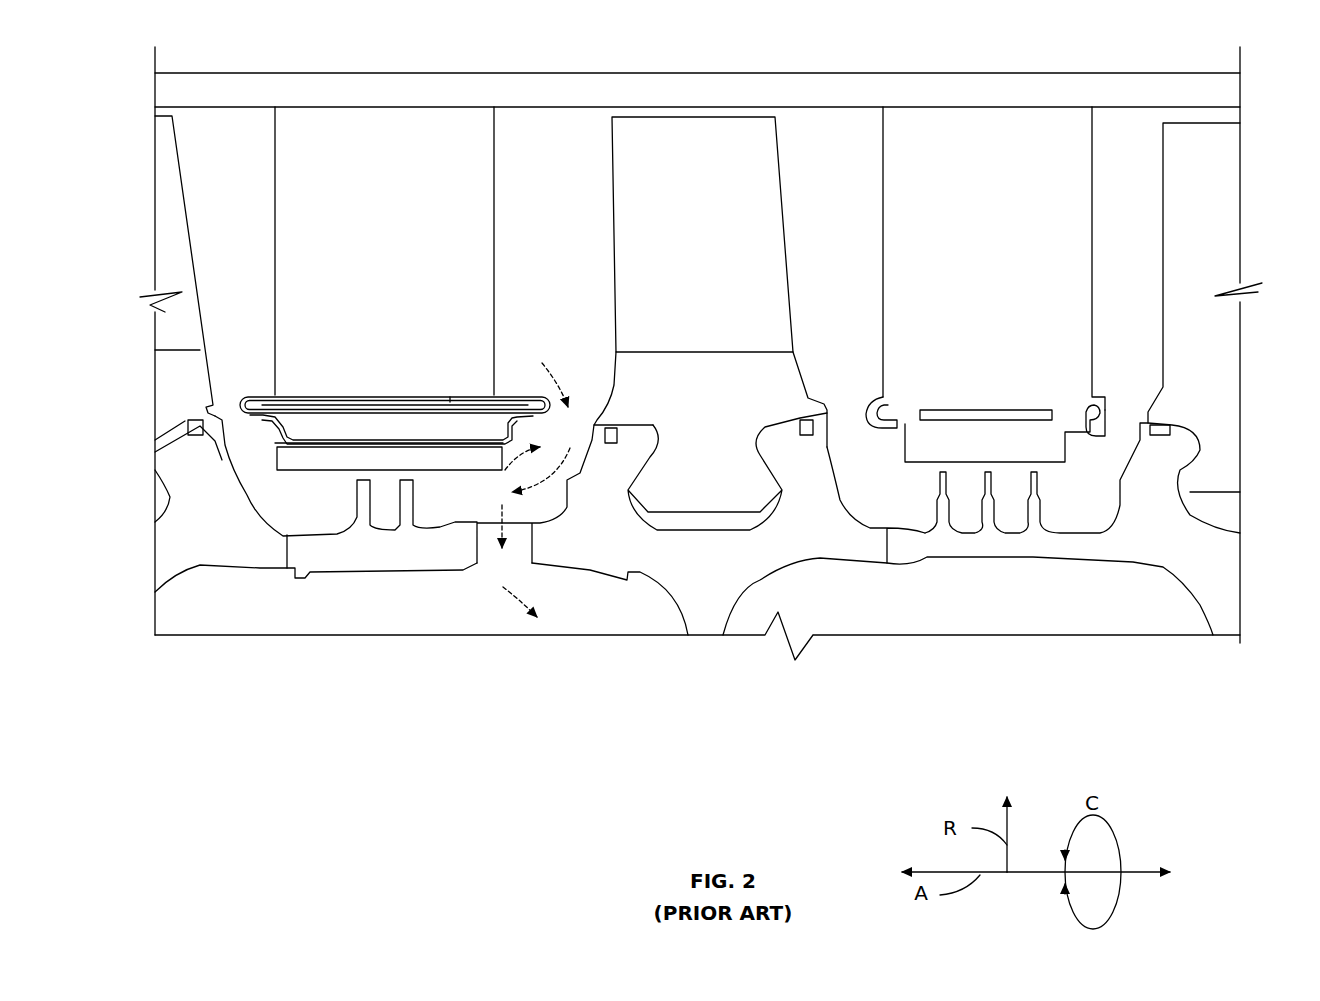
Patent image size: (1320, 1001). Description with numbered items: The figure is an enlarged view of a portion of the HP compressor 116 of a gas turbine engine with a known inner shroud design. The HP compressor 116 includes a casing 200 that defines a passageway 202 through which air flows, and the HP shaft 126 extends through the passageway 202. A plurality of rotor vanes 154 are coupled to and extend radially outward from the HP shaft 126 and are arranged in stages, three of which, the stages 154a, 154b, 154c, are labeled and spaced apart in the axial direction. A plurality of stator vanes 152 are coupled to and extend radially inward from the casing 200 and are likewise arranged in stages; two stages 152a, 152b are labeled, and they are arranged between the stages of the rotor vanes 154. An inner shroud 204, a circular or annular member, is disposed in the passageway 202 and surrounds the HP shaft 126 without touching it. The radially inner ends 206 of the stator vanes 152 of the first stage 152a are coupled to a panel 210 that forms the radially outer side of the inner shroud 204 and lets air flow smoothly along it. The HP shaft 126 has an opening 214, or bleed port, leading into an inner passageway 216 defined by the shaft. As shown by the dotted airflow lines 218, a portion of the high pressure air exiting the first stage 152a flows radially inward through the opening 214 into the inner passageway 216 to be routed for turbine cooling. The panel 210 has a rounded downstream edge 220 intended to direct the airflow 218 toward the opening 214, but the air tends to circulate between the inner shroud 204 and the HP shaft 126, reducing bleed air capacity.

The HP compressor 116 is at (260, 48).
The casing 200 is at (432, 87).
The passageway 202 is at (568, 225).
The stator vanes 152 is at (300, 323).
The first stage of stator vanes 152a is at (384, 268).
The second stage of stator vanes 152b is at (1018, 249).
The rotor vanes 154 is at (1228, 263).
The first stage of rotor vanes 154a is at (174, 257).
The second stage of rotor vanes 154b is at (730, 259).
The third stage of rotor vanes 154c is at (1193, 244).
The HP shaft 126 is at (333, 557).
The inner shroud 204 is at (350, 444).
The radially inner ends 206 is at (373, 395).
The panel 210 is at (293, 405).
The opening 214 is at (483, 523).
The inner passageway 216 is at (468, 614).
The airflow lines 218 is at (505, 588).
The downstream edge 220 is at (538, 403).